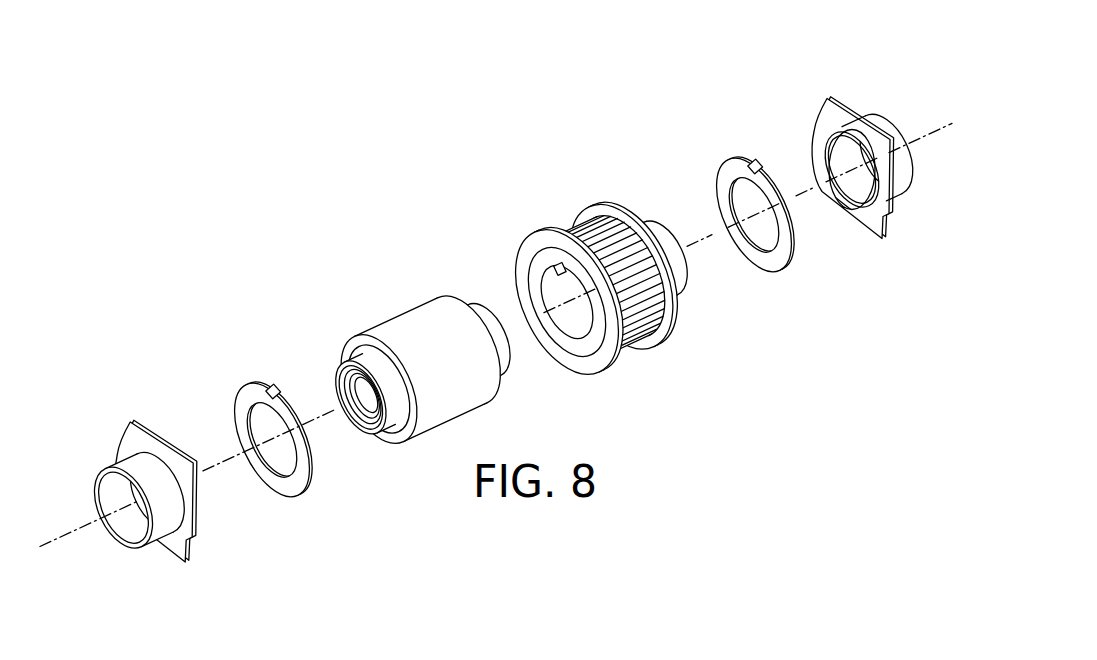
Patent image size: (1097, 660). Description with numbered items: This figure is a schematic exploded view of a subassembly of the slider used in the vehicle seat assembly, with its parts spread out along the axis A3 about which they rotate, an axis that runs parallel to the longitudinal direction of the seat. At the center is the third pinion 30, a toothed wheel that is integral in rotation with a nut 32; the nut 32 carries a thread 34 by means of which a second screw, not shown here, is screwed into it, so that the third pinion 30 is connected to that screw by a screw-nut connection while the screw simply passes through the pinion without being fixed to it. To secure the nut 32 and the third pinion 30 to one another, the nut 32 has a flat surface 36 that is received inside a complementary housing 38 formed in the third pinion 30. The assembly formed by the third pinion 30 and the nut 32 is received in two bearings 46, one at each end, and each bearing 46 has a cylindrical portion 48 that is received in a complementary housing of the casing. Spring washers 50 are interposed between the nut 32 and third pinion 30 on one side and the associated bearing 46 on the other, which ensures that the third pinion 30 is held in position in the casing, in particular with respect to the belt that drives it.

The third pinion 30 is at (643, 330).
The nut 32 is at (363, 338).
The thread 34 is at (361, 435).
The flat surface 36 is at (482, 320).
The complementary housing 38 is at (563, 273).
The bearing 46 is at (137, 437).
The cylindrical portion 48 is at (163, 517).
The spring washer 50 is at (242, 395).
The axis A3 is at (212, 472).